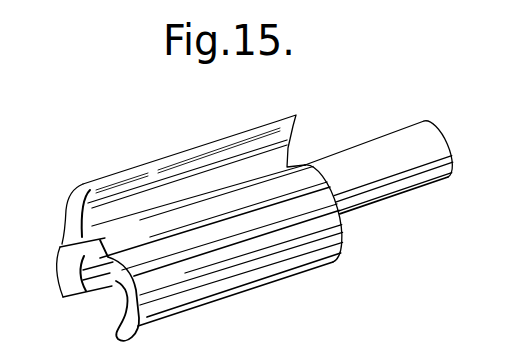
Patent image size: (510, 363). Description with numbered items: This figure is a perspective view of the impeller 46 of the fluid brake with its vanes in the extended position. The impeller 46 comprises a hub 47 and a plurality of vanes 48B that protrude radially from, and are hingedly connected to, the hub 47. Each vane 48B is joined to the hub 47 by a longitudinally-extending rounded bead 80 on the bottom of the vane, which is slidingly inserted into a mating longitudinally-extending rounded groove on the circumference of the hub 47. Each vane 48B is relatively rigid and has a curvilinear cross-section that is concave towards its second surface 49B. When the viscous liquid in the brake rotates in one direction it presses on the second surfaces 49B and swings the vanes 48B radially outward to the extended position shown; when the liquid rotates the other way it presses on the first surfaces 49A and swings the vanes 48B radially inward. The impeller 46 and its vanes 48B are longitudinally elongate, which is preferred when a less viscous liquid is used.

The impeller 46 is at (150, 163).
The hub 47 is at (383, 155).
The vane 48B is at (197, 138).
The first surface 49A is at (263, 258).
The second surface 49B is at (143, 203).
The rounded bead 80 is at (100, 302).